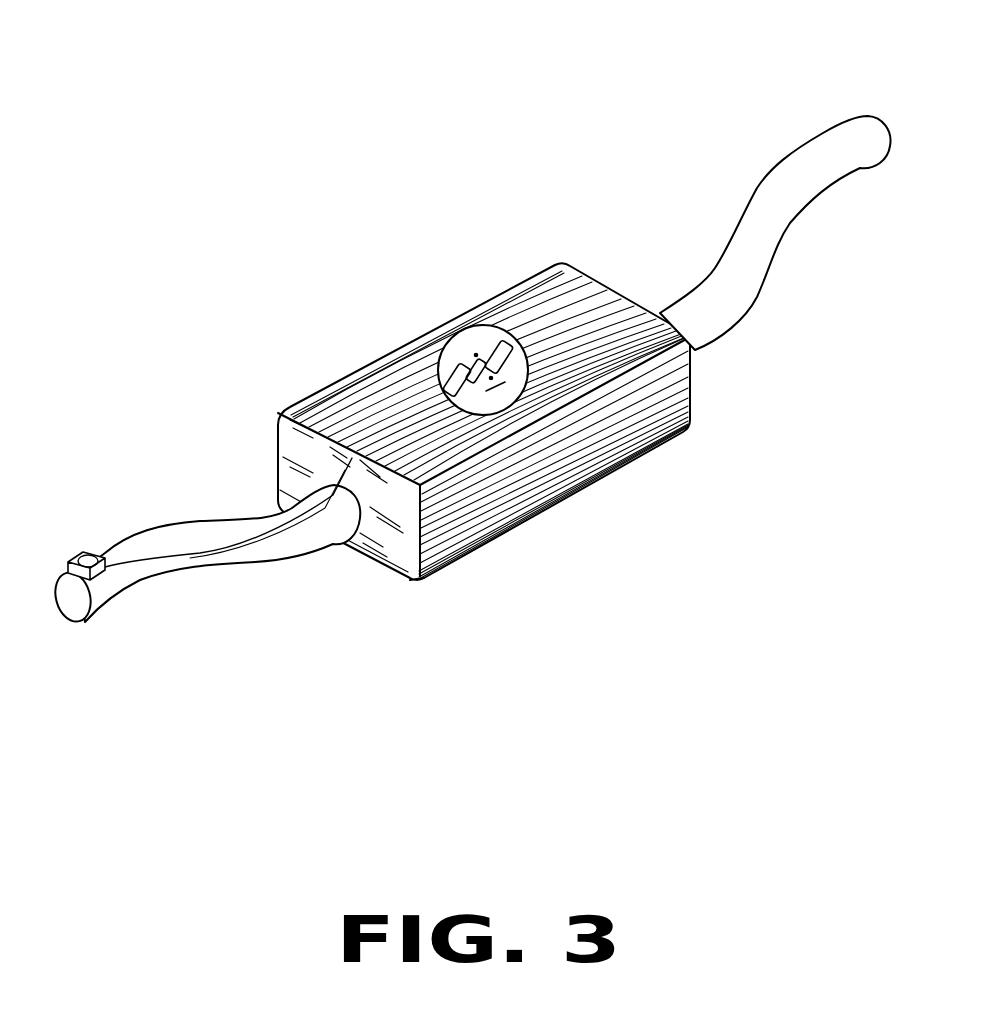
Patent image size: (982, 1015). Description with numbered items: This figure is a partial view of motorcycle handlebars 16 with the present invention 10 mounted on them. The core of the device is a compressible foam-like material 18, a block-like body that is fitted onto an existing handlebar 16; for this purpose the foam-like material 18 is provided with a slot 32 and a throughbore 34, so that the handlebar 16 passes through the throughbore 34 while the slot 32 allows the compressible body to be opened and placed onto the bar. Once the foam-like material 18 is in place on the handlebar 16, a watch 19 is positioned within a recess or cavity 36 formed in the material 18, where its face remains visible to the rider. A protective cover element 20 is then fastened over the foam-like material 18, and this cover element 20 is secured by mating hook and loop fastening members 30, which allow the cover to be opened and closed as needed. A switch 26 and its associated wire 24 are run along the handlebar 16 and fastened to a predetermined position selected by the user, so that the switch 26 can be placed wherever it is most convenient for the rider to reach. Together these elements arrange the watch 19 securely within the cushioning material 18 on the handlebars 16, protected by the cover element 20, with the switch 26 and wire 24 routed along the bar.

The present invention 10 is at (449, 339).
The handlebars 16 is at (728, 310).
The compressible foam-like material 18 is at (318, 447).
The watch 19 is at (487, 340).
The protective cover element 20 is at (388, 378).
The wire 24 is at (190, 557).
The switch 26 is at (90, 558).
The hook and loop fastening members 30 is at (405, 583).
The slot 32 is at (345, 558).
The throughbore 34 is at (371, 506).
The recess or cavity 36 is at (538, 348).